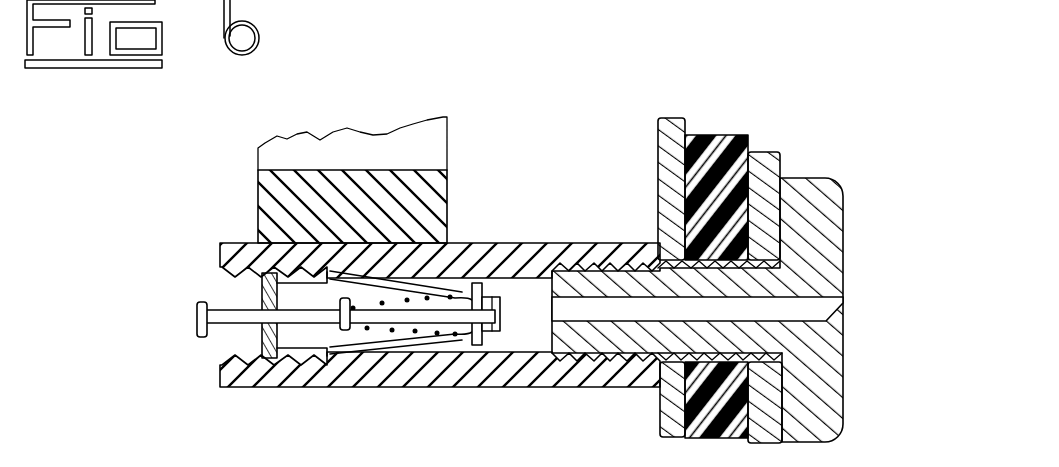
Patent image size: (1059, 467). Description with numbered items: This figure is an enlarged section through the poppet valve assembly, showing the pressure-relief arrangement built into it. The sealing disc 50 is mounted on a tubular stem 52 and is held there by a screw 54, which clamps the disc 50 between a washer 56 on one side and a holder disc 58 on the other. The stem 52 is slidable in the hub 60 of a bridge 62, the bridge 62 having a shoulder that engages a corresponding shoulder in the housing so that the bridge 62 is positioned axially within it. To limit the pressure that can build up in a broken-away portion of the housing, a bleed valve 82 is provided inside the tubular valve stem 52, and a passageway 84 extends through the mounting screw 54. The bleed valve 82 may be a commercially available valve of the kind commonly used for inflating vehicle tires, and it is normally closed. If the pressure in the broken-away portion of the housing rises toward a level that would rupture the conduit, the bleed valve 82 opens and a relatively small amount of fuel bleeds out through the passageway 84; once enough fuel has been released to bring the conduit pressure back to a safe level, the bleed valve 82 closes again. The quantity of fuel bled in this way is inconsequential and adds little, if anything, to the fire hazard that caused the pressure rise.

The sealing disc 50 is at (710, 137).
The stem 52 is at (500, 387).
The screw 54 is at (810, 178).
The washer 56 is at (757, 152).
The holder disc 58 is at (668, 118).
The hub 60 is at (407, 170).
The bridge 62 is at (360, 113).
The bleed valve 82 is at (188, 283).
The passageway 84 is at (843, 300).